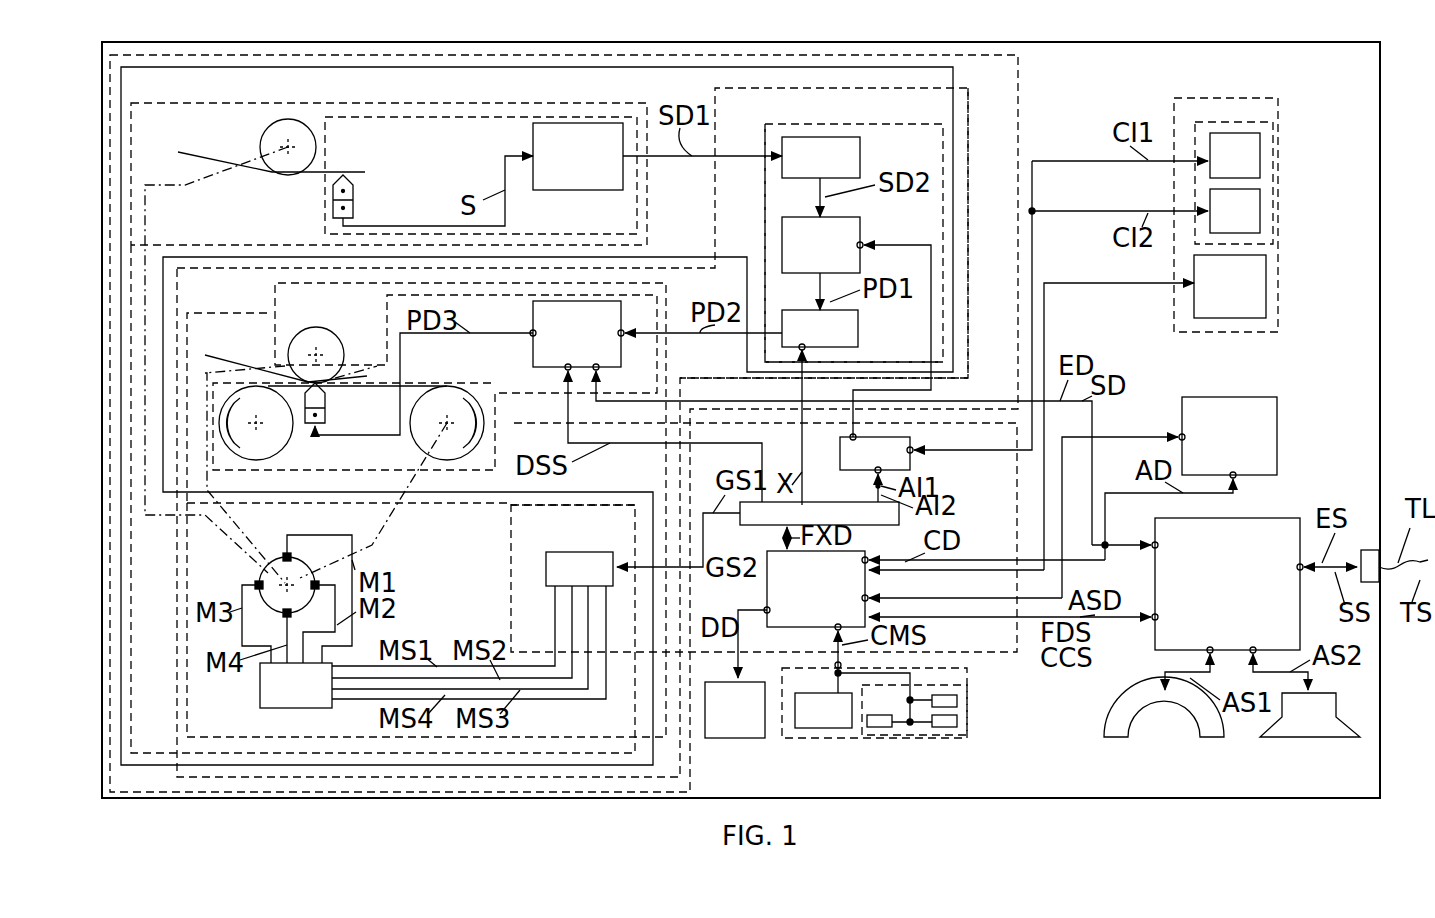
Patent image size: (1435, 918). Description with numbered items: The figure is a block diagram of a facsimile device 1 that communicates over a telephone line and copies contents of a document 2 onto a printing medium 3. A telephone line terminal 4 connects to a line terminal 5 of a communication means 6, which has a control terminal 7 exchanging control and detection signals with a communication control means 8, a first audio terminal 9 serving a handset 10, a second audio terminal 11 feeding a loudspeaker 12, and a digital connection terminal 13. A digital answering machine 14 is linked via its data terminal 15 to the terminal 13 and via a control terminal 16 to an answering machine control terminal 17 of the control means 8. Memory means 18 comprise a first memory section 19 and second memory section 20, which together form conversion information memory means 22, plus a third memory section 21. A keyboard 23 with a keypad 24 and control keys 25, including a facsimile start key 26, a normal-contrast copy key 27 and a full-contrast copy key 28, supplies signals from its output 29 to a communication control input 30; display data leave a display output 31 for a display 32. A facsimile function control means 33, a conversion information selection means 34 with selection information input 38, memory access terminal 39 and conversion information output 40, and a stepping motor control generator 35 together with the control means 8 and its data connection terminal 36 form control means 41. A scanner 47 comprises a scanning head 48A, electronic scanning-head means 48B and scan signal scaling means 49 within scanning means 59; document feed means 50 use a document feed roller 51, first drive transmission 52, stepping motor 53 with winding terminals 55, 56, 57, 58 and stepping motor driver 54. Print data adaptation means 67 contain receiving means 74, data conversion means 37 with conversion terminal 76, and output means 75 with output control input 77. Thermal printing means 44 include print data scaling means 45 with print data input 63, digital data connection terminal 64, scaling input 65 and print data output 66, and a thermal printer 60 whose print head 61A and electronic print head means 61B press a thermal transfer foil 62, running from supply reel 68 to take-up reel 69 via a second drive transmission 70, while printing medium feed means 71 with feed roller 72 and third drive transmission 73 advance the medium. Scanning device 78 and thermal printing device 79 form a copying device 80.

The facsimile device 1 is at (1418, 84).
The document 2 is at (205, 155).
The printing medium 3 is at (240, 365).
The telephone line terminal 4 is at (1367, 553).
The line terminal 5 is at (1303, 570).
The communication means 6 is at (1270, 543).
The control terminal 7 is at (1151, 619).
The communication control means 8 is at (790, 600).
The first audio terminal 9 is at (1205, 655).
The handset 10 is at (1160, 730).
The second audio terminal 11 is at (1255, 655).
The loudspeaker 12 is at (1316, 732).
The digital connection terminal 13 is at (1151, 548).
The digital answering machine 14 is at (1240, 437).
The data terminal 15 is at (1237, 478).
The control terminal 16 is at (1178, 437).
The answering machine control terminal 17 is at (870, 598).
The memory means 18 is at (1210, 97).
The first memory section 19 is at (1248, 162).
The second memory section 20 is at (1248, 220).
The third memory section 21 is at (1250, 297).
The conversion information memory means 22 is at (1254, 121).
The keyboard 23 is at (810, 741).
The keypad 24 is at (832, 710).
The control keys 25 is at (950, 736).
The facsimile start key 26 is at (880, 728).
The normal-contrast copy key 27 is at (950, 702).
The full-contrast copy key 28 is at (950, 723).
The output 29 is at (835, 665).
The communication control input 30 is at (834, 629).
The display output 31 is at (763, 609).
The display 32 is at (740, 715).
The facsimile function control means 33 is at (755, 515).
The conversion information selection means 34 is at (888, 452).
The stepping motor control generator 35 is at (556, 586).
The data connection terminal 36 is at (868, 559).
The data conversion means 37 is at (832, 237).
The selection information input 38 is at (873, 478).
The memory access terminal 39 is at (913, 452).
The conversion information output 40 is at (850, 437).
The control means 41 is at (508, 614).
The thermal printing means 44 is at (262, 310).
The print data scaling means 45 is at (570, 336).
The scanner 47 is at (323, 197).
The scanning head 48A is at (346, 190).
The electronic scanning-head means 48B is at (346, 207).
The scan signal scaling means 49 is at (570, 138).
The document feed means 50 is at (168, 176).
The document feed roller 51 is at (288, 128).
The first drive transmission 52 is at (187, 187).
The stepping motor 53 is at (270, 575).
The stepping motor driver 54 is at (298, 692).
The winding terminal 55 is at (282, 553).
The winding terminal 56 is at (318, 584).
The winding terminal 57 is at (284, 614).
The winding terminal 58 is at (257, 583).
The scanning means 59 is at (688, 189).
The thermal printer 60 is at (384, 366).
The print head 61A is at (320, 401).
The electronic print head means 61B is at (320, 415).
The thermal transfer foil 62 is at (420, 385).
The print data input 63 is at (640, 325).
The digital data connection terminal 64 is at (601, 370).
The scaling input 65 is at (563, 370).
The print data output 66 is at (530, 330).
The print data adaptation means 67 is at (766, 231).
The supply reel 68 is at (280, 442).
The take-up reel 69 is at (430, 432).
The second drive transmission 70 is at (375, 545).
The printing medium feed means 71 is at (331, 317).
The printing medium feed roller 72 is at (325, 348).
The third drive transmission 73 is at (282, 362).
The receiving means 74 is at (838, 165).
The output means 75 is at (812, 322).
The conversion terminal 76 is at (864, 249).
The output control input 77 is at (845, 347).
The scanning device 78 is at (1013, 94).
The thermal printing device 79 is at (970, 135).
The copying device 80 is at (1022, 103).